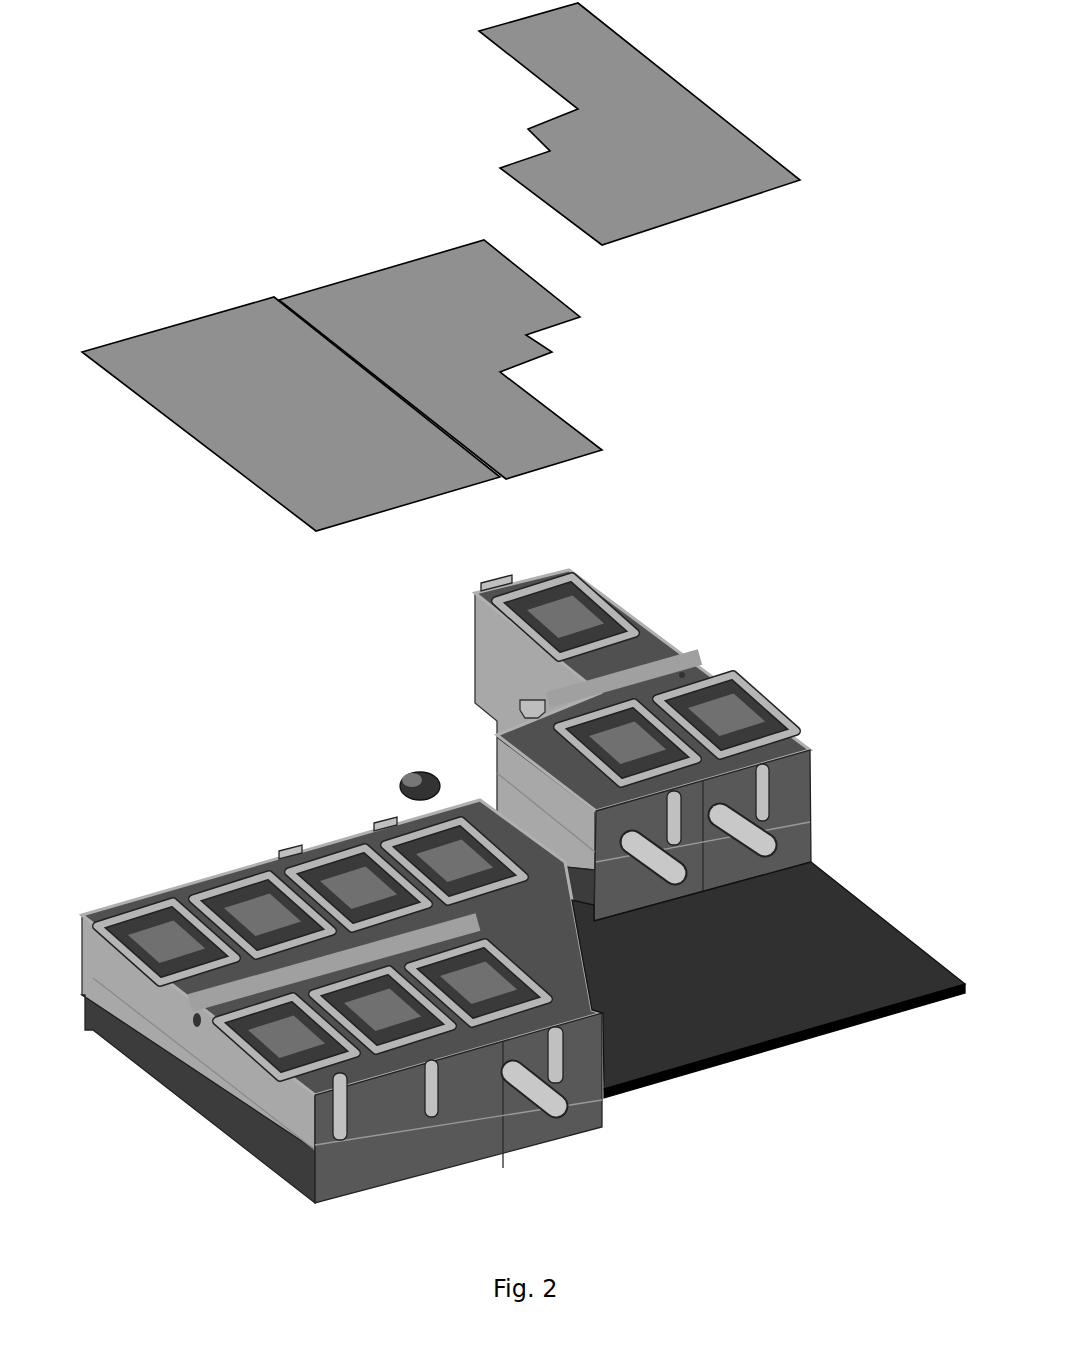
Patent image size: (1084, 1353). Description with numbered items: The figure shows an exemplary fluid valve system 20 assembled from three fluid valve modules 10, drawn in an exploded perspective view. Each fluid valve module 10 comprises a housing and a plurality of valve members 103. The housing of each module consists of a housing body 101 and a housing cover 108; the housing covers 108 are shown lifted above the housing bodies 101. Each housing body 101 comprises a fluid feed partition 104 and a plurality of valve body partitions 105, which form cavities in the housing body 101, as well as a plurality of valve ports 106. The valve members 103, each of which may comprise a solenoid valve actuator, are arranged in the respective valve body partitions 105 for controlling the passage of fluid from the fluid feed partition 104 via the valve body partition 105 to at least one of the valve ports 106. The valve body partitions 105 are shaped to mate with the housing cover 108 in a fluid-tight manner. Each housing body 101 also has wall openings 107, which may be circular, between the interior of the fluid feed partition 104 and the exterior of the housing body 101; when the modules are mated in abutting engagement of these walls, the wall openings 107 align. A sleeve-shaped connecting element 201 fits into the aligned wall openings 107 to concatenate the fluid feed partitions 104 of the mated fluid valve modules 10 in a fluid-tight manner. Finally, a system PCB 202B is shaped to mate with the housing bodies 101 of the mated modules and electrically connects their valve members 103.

The fluid valve module 10 is at (433, 881).
The fluid valve system 20 is at (503, 617).
The housing body 101 is at (748, 697).
The valve member 103 is at (446, 827).
The fluid feed partition 104 is at (445, 830).
The valve body partition 105 is at (446, 827).
The valve port 106 is at (492, 578).
The wall opening 107 is at (683, 670).
The housing cover 108 is at (397, 264).
The connecting element 201 is at (407, 778).
The system PCB 202B is at (852, 910).